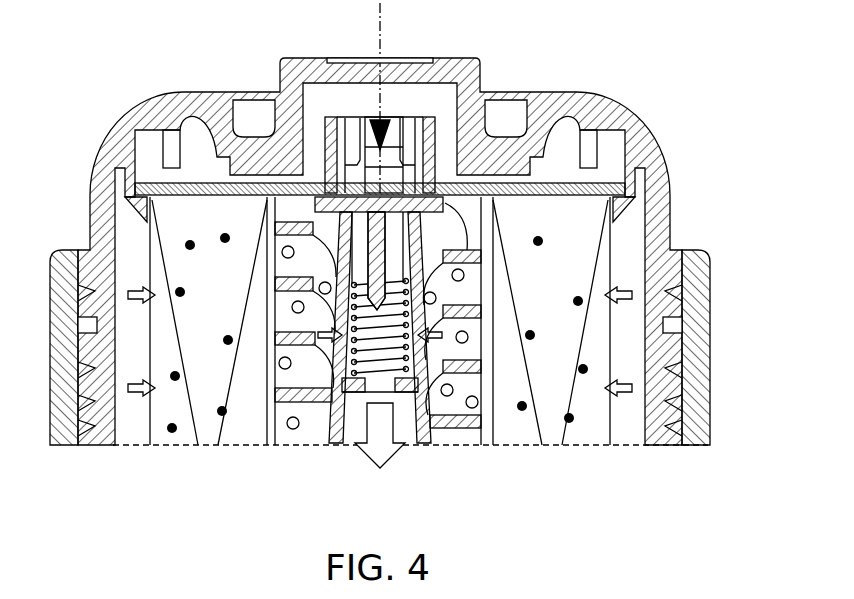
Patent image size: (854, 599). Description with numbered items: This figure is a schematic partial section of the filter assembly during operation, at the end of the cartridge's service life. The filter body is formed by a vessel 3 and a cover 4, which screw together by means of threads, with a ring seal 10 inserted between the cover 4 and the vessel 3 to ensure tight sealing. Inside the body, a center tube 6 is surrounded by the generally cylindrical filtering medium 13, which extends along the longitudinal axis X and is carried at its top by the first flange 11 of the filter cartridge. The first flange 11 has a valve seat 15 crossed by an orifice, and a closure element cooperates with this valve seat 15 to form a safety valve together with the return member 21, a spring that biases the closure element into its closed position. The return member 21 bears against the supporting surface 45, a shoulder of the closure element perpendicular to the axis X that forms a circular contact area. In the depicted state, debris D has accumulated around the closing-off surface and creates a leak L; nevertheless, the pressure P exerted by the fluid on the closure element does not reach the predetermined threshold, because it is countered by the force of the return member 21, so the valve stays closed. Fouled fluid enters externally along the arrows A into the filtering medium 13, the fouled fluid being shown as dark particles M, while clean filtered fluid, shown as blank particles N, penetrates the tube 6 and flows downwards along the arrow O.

The vessel 3 is at (697, 345).
The cover 4 is at (660, 143).
The tube 6 is at (452, 426).
The ring seal 10 is at (82, 292).
The first flange 11 is at (598, 190).
The filtering medium 13 is at (593, 418).
The valve seat 15 is at (405, 160).
The return member 21 is at (395, 382).
The supporting surface 45 is at (337, 278).
The longitudinal axis X is at (383, 17).
The pressure P is at (378, 118).
The leak L is at (317, 182).
The debris D is at (423, 185).
The arrows A is at (132, 294).
The filter F is at (168, 392).
The dark particles M is at (173, 433).
The blank particles N is at (293, 430).
The arrow O is at (366, 455).